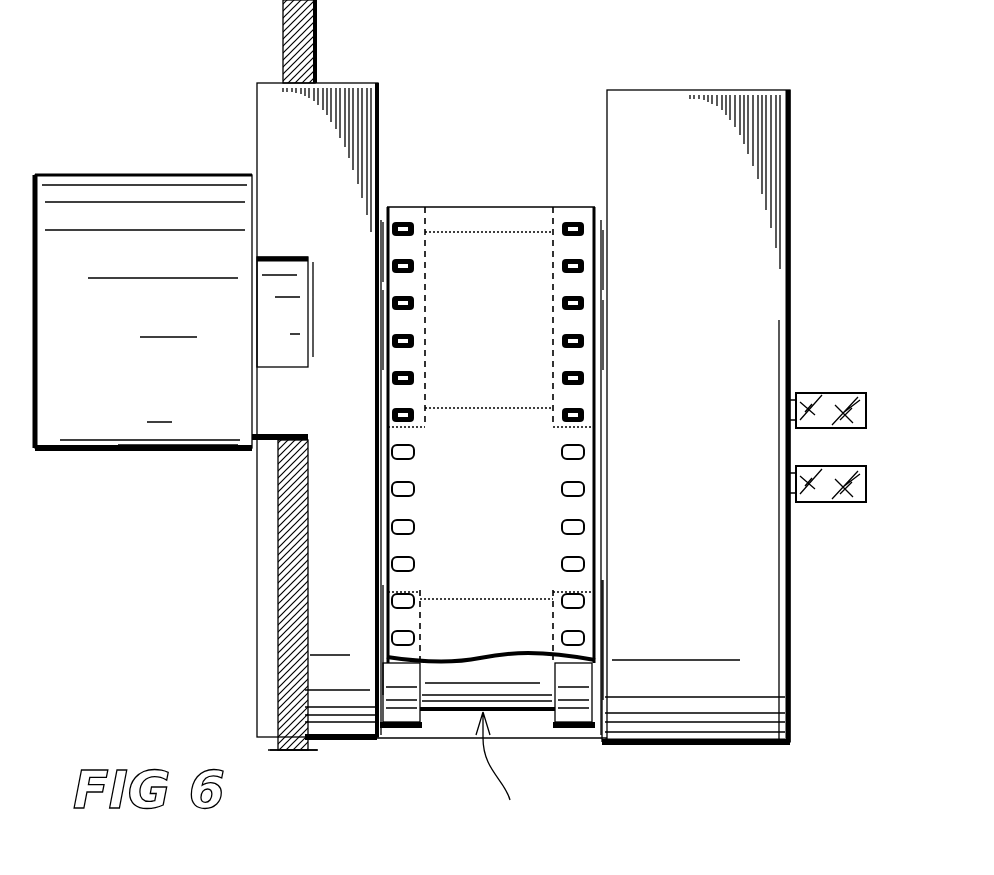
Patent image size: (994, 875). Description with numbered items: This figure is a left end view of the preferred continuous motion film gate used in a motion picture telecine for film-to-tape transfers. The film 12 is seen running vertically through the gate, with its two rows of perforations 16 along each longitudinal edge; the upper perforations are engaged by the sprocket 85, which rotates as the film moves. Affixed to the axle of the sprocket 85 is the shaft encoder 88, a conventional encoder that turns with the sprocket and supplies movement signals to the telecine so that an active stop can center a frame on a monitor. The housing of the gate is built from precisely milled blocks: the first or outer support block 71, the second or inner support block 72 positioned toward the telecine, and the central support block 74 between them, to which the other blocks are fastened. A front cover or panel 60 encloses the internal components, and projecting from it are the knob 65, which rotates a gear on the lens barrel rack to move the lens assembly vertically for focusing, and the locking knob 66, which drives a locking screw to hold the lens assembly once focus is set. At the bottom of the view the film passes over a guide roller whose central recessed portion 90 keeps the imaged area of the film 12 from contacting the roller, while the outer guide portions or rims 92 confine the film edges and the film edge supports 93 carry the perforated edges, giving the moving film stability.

The film 12 is at (595, 541).
The perforations 16 is at (580, 520).
The front cover or panel 60 is at (792, 130).
The knob 65 is at (818, 393).
The locking knob 66 is at (822, 502).
The first or outer support block 71 is at (660, 743).
The second or inner support block 72 is at (330, 738).
The central support block 74 is at (515, 730).
The sprocket 85 is at (483, 232).
The shaft encoder 88 is at (175, 178).
The central recessed portion 90 is at (511, 762).
The outer guide portions or rims 92 is at (420, 728).
The film edge supports 93 is at (562, 728).